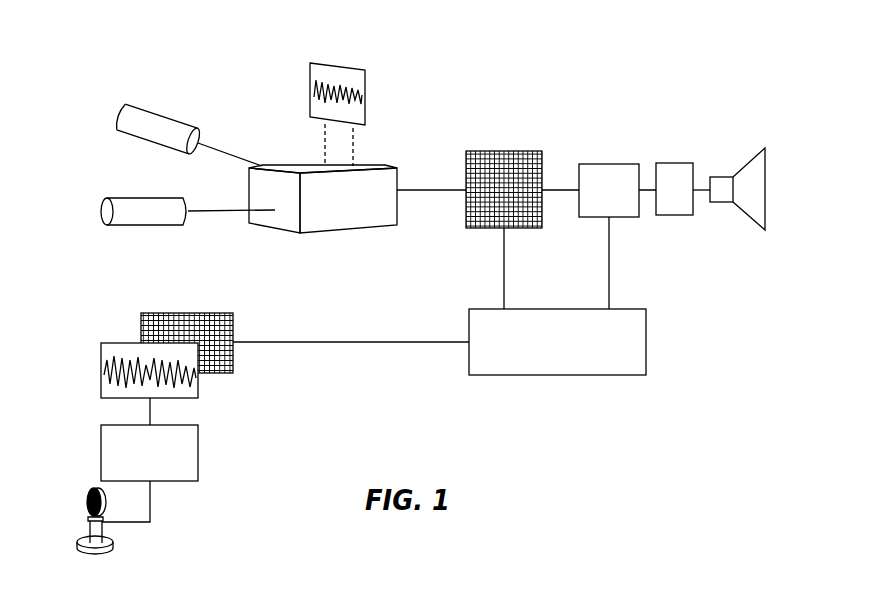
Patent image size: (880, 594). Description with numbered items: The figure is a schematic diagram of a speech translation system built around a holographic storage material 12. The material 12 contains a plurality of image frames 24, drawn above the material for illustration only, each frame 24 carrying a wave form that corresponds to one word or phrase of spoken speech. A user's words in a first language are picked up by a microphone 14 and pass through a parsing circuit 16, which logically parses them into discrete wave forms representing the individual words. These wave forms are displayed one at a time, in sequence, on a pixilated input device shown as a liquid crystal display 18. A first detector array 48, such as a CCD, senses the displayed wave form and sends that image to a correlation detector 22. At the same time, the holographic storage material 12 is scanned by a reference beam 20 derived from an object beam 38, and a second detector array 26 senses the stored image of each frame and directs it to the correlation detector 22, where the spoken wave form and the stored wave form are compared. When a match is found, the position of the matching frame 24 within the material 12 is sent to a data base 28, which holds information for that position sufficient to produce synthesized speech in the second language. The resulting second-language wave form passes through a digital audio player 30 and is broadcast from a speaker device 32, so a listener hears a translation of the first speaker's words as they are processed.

The holographic storage material 12 is at (370, 167).
The microphone 14 is at (87, 517).
The parsing circuit 16 is at (185, 451).
The liquid crystal display 18 is at (101, 351).
The reference beam 20 is at (151, 118).
The correlation detector 22 is at (633, 352).
The image frame 24 is at (347, 70).
The second detector array 26 is at (499, 152).
The data base 28 is at (597, 168).
The digital audio player 30 is at (672, 170).
The speaker device 32 is at (753, 172).
The object beam 38 is at (155, 202).
The first detector array 48 is at (213, 312).